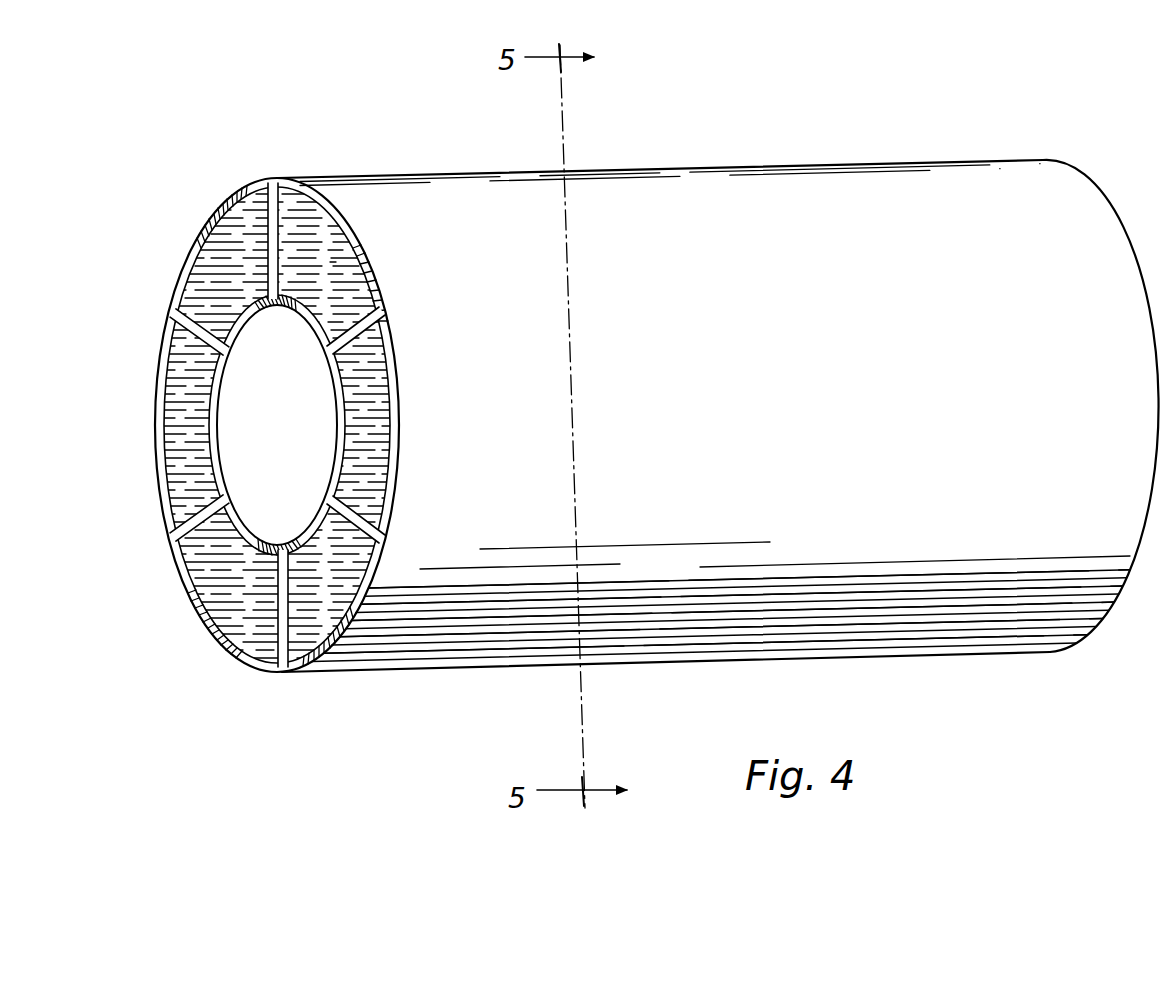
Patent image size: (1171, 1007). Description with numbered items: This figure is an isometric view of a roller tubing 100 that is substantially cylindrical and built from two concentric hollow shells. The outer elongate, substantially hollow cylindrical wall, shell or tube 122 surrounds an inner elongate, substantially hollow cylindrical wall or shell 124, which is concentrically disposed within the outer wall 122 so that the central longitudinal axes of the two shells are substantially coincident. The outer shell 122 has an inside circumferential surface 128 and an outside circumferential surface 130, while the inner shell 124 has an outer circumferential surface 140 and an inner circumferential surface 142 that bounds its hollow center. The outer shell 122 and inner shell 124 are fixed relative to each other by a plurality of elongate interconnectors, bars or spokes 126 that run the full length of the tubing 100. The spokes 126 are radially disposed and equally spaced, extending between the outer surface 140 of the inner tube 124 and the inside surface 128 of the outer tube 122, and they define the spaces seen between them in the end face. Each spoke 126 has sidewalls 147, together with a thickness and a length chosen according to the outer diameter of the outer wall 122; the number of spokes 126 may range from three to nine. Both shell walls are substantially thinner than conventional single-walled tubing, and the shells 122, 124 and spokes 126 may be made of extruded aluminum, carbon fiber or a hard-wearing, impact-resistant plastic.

The roller tubing 100 is at (956, 148).
The outer wall 122 is at (394, 454).
The inner wall 124 is at (324, 314).
The spokes 126 is at (292, 588).
The inside circumferential surface 128 is at (392, 423).
The outside circumferential surface 130 is at (400, 385).
The outer circumferential surface 140 is at (329, 327).
The inner circumferential surface 142 is at (322, 338).
The sidewalls 147 is at (309, 259).